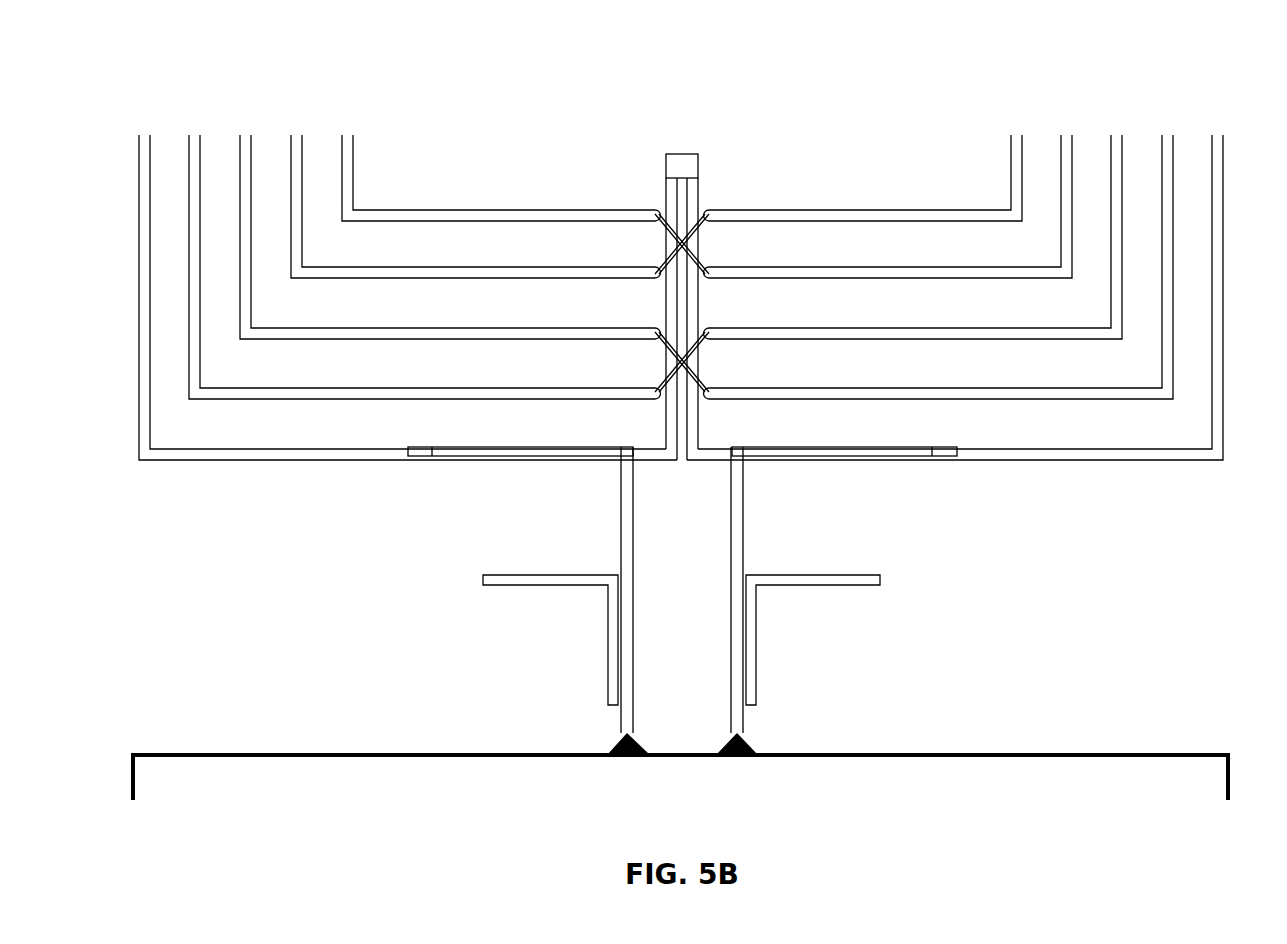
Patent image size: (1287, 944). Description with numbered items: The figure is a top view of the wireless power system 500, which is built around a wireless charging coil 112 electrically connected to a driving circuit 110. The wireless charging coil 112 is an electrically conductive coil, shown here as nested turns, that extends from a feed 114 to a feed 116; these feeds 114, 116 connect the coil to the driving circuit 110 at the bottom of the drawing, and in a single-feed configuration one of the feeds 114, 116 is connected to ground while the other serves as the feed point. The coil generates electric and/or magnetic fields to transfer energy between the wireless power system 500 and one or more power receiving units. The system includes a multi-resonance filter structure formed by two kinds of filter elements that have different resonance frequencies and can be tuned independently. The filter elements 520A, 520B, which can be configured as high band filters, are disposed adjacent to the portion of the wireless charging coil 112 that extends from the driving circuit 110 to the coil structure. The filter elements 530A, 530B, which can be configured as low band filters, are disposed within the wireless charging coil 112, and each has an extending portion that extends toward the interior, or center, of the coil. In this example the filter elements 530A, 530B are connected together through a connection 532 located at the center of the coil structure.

The wireless power system 500 is at (1174, 96).
The connection 532 is at (694, 147).
The filter element 530A is at (666, 302).
The filter element 530B is at (698, 300).
The wireless charging coil 112 is at (1131, 461).
The filter element 520A is at (566, 598).
The filter element 520B is at (786, 602).
The feed 114 is at (624, 774).
The feed 116 is at (738, 774).
The driving circuit 110 is at (1140, 752).